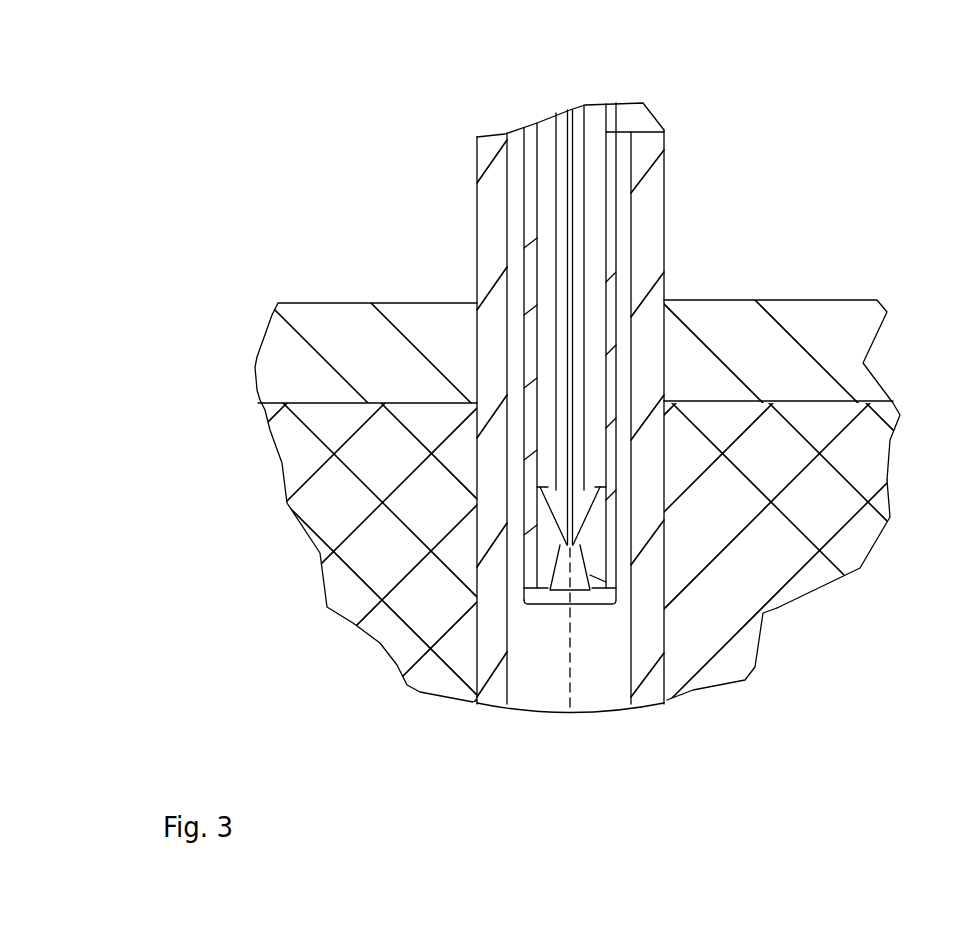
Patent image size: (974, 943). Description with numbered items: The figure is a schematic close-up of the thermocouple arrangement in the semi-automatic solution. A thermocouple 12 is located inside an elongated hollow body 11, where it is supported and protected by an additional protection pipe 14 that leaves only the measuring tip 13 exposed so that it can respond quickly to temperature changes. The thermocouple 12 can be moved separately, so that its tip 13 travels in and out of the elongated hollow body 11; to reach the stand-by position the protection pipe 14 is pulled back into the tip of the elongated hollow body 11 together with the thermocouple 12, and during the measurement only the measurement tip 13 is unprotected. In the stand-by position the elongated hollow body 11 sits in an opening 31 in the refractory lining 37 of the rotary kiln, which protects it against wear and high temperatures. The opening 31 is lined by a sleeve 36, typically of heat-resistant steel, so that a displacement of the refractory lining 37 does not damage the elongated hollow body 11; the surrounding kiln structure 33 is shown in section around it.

The elongated hollow body 11 is at (608, 122).
The thermocouple 12 is at (563, 293).
The measuring tip 13 is at (572, 548).
The protection pipe 14 is at (569, 545).
The opening 31 is at (610, 687).
The housing 33 is at (827, 318).
The sleeve 36 is at (668, 678).
The refractory lining 37 is at (855, 535).